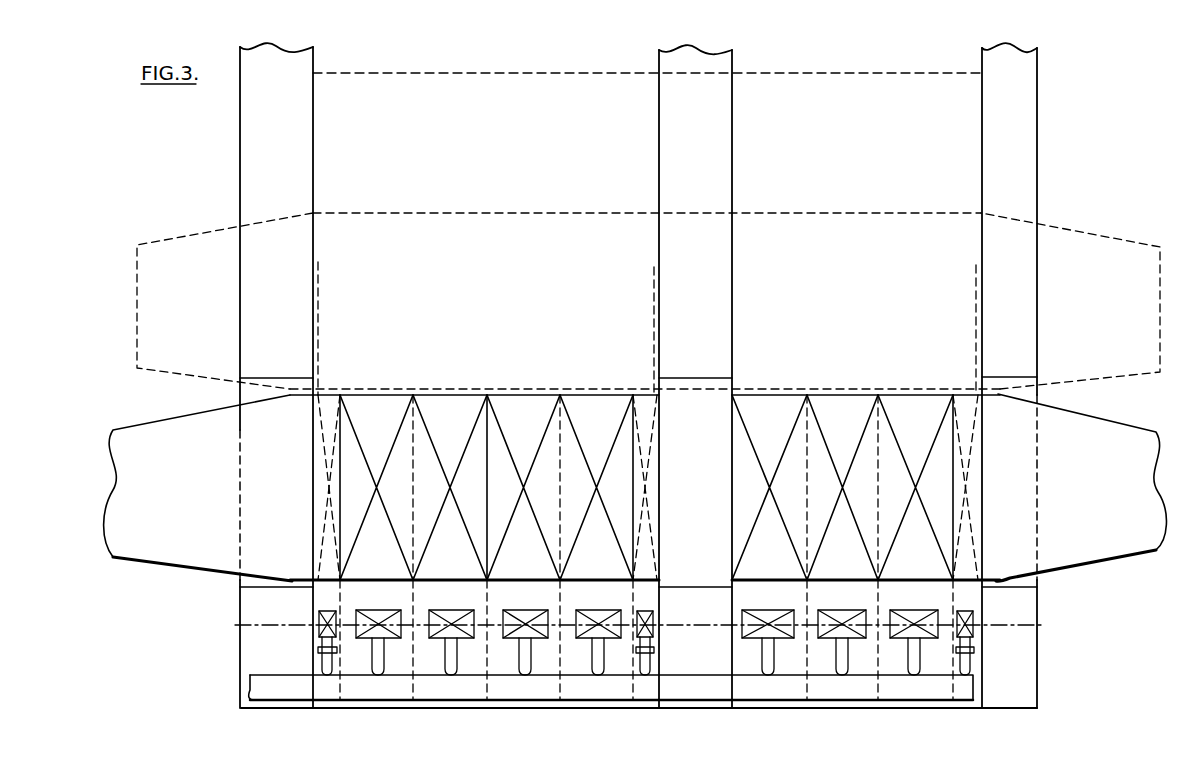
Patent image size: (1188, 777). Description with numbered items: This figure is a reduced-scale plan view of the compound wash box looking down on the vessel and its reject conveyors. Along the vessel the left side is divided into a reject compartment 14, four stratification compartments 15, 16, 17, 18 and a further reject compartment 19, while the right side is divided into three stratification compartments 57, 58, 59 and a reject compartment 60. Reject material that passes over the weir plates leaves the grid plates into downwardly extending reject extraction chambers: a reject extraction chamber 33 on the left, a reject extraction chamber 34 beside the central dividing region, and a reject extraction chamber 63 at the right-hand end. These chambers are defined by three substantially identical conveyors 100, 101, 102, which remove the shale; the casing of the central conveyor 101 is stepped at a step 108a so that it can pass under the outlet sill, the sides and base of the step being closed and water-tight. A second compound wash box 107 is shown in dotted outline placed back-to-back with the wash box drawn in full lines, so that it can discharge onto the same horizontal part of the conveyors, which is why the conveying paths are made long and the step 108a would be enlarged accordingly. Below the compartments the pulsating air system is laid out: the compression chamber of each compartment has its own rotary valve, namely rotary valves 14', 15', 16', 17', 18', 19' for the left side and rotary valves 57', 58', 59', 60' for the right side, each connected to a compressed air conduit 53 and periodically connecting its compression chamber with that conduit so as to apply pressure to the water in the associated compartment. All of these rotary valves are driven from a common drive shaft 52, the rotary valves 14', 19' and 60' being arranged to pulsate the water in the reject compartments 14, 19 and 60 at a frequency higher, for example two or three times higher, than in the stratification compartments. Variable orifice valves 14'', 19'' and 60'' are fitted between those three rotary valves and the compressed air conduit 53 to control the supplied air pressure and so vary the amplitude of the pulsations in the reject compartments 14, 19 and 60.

The conveyor 100 is at (247, 270).
The conveyor 101 is at (665, 328).
The conveyor 102 is at (1018, 333).
The second compound wash box 107 is at (463, 84).
The step 108a is at (662, 386).
The reject extraction chamber 34 is at (706, 418).
The reject extraction chamber 33 is at (240, 428).
The reject extraction chamber 63 is at (1018, 427).
The reject compartment 14 is at (270, 421).
The stratification compartment 15 is at (376, 487).
The stratification compartment 16 is at (450, 487).
The stratification compartment 17 is at (523, 487).
The stratification compartment 18 is at (596, 487).
The reject compartment 19 is at (664, 423).
The stratification compartment 57 is at (769, 487).
The stratification compartment 58 is at (842, 487).
The stratification compartment 59 is at (915, 487).
The reject compartment 60 is at (989, 422).
The rotary valve 14' is at (263, 632).
The variable orifice valve 14'' is at (262, 653).
The rotary valve 15' is at (378, 630).
The rotary valve 16' is at (451, 630).
The rotary valve 17' is at (525, 630).
The rotary valve 18' is at (598, 630).
The rotary valve 19' is at (672, 632).
The variable orifice valve 19'' is at (673, 646).
The rotary valve 57' is at (768, 630).
The rotary valve 58' is at (842, 630).
The rotary valve 59' is at (914, 630).
The rotary valve 60' is at (992, 631).
The variable orifice valve 60'' is at (1020, 645).
The compressed air conduit 53 is at (437, 688).
The common drive shaft 52 is at (717, 628).